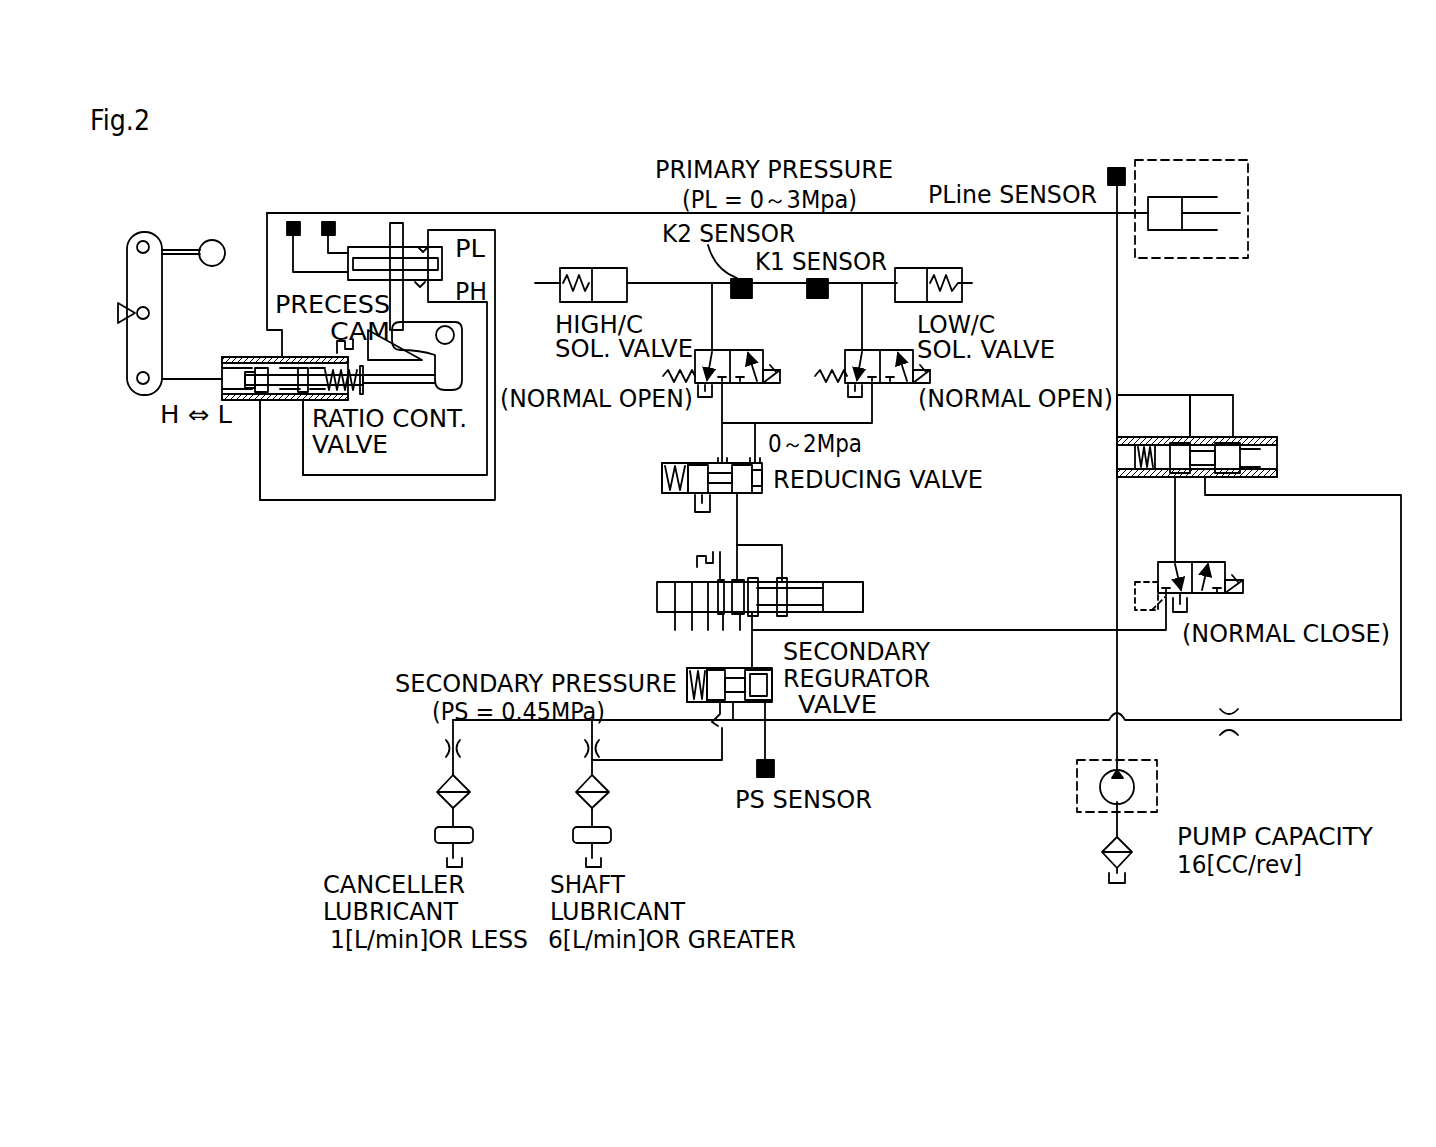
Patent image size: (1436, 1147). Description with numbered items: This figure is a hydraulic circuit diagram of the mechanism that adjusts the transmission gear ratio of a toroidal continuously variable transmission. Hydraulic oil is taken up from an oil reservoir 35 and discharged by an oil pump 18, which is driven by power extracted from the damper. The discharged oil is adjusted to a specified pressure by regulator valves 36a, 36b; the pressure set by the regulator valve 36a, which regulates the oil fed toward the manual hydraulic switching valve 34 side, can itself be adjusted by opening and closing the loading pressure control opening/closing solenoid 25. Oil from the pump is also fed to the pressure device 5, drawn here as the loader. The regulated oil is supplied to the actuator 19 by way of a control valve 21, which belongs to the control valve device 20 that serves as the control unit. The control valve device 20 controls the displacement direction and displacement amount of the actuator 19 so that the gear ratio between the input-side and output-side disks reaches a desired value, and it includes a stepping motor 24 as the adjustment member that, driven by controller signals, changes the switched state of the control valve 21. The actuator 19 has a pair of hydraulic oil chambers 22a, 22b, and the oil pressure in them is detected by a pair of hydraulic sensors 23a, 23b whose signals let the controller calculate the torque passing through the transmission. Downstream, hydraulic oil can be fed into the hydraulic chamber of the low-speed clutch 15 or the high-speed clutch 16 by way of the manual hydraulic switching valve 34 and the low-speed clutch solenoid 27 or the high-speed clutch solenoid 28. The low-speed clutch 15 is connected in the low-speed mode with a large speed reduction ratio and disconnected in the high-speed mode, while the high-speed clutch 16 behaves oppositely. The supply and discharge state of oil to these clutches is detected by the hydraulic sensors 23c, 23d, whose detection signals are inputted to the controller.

The pressure device 5 is at (1197, 232).
The low-speed clutch 15 is at (972, 283).
The high-speed clutch 16 is at (540, 285).
The oil pump 18 is at (1100, 785).
The actuator 19 is at (396, 225).
The control valve device 20 is at (183, 271).
The control valve 21 is at (248, 357).
The hydraulic oil chamber 22a is at (420, 288).
The hydraulic oil chamber 22b is at (425, 245).
The hydraulic sensor 23a is at (290, 222).
The hydraulic sensor 23b is at (330, 222).
The hydraulic sensor 23c is at (817, 298).
The hydraulic sensor 23d is at (742, 298).
The stepping motor 24 is at (215, 268).
The loading pressure control opening/closing solenoid 25 is at (1227, 570).
The low-speed clutch solenoid 27 is at (900, 385).
The high-speed clutch solenoid 28 is at (702, 387).
The manual hydraulic switching valve 34 is at (863, 593).
The oil reservoir 35 is at (448, 860).
The regulator valve 36a is at (1265, 437).
The regulator valve 36b is at (705, 672).